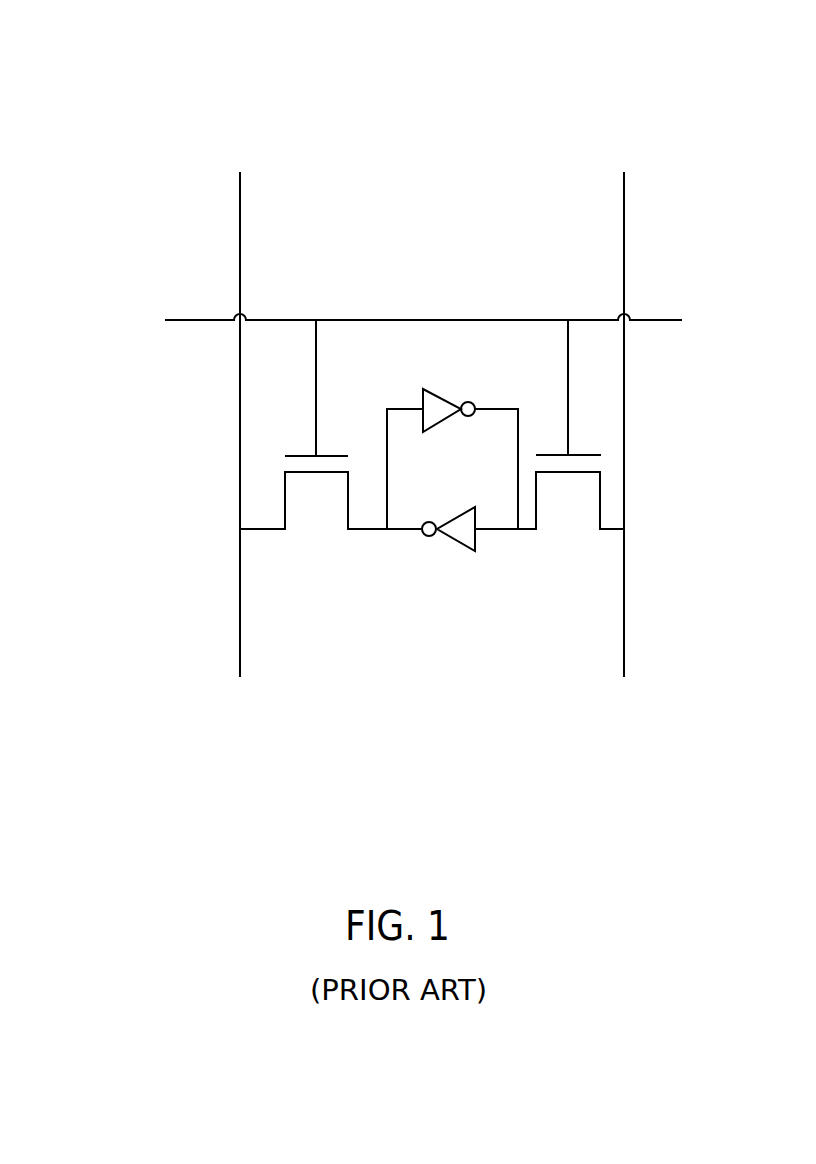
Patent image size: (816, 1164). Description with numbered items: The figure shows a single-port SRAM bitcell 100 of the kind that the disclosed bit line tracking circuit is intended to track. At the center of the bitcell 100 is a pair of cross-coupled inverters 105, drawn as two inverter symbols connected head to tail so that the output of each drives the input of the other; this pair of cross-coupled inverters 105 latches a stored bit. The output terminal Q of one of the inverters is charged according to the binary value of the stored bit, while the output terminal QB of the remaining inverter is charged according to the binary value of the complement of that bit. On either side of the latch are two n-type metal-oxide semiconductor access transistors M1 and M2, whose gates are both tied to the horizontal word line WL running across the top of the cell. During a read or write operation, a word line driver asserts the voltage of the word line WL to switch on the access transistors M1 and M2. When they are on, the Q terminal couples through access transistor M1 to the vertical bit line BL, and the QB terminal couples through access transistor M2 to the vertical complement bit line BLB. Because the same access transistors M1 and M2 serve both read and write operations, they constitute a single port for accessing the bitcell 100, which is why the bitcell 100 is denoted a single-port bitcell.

The bitcell 100 is at (358, 344).
The pair of cross-coupled inverters 105 is at (385, 375).
The access transistor M1 is at (571, 424).
The access transistor M2 is at (313, 424).
The bit line BL is at (617, 407).
The complement bit line BLB is at (240, 405).
The word line WL is at (423, 296).
The output terminal Q is at (498, 551).
The output terminal QB is at (392, 552).